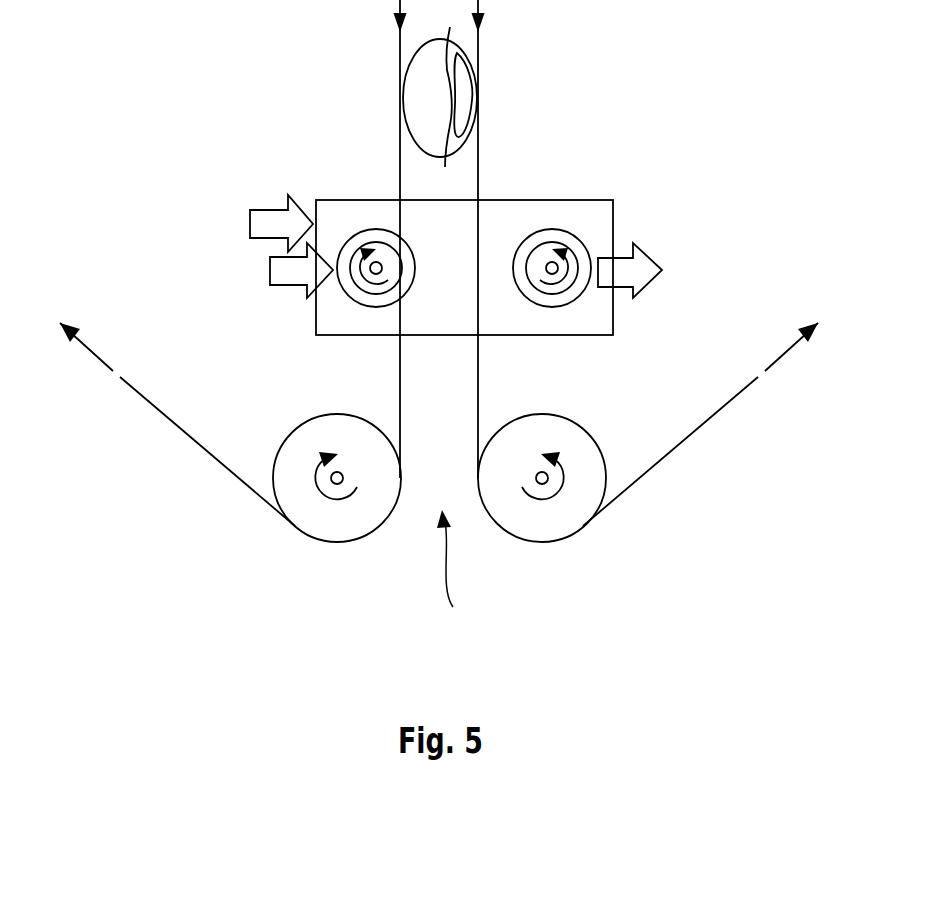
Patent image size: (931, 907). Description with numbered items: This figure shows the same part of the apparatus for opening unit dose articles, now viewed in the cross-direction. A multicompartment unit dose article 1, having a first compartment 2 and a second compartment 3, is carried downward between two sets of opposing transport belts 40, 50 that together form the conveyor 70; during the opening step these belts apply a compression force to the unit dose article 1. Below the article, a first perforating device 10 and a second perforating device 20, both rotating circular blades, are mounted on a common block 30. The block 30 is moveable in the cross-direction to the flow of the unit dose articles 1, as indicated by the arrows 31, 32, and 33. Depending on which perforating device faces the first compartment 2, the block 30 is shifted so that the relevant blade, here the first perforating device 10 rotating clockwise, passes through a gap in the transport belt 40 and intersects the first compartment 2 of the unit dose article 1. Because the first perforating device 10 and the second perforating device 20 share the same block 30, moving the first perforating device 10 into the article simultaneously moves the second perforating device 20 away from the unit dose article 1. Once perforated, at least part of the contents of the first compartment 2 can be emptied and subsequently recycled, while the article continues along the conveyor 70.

The multicompartment unit dose article 1 is at (411, 42).
The first compartment 2 is at (415, 97).
The second compartment 3 is at (470, 100).
The first perforating device 10 is at (362, 284).
The second perforating device 20 is at (565, 285).
The block 30 is at (342, 214).
The arrow 31 is at (262, 223).
The arrow 32 is at (282, 268).
The arrow 33 is at (643, 268).
The transport belt 40 is at (398, 390).
The transport belt 50 is at (480, 391).
The conveyor 70 is at (464, 568).